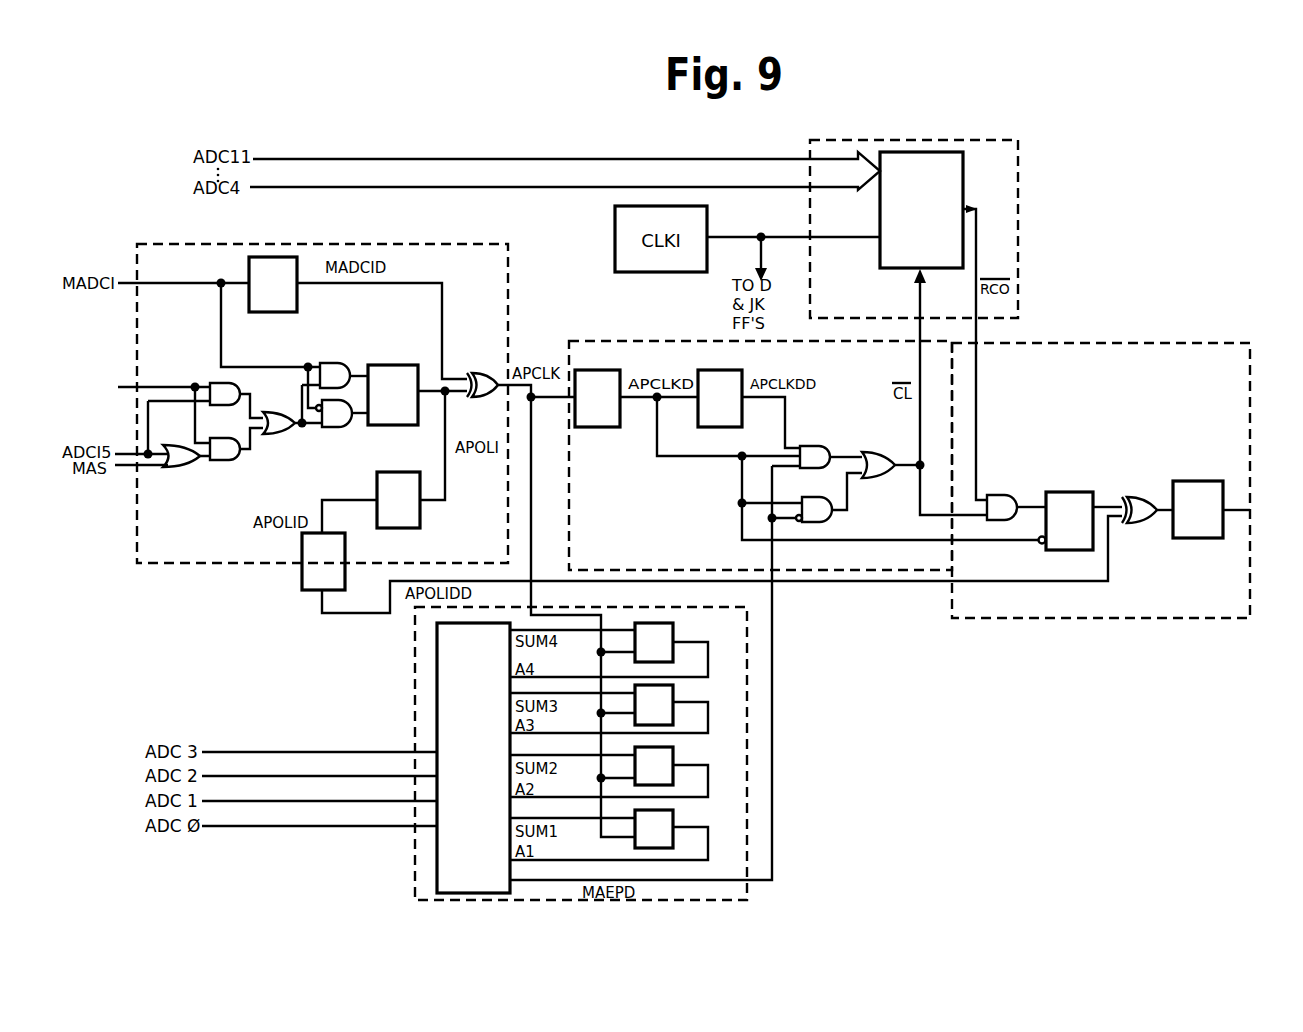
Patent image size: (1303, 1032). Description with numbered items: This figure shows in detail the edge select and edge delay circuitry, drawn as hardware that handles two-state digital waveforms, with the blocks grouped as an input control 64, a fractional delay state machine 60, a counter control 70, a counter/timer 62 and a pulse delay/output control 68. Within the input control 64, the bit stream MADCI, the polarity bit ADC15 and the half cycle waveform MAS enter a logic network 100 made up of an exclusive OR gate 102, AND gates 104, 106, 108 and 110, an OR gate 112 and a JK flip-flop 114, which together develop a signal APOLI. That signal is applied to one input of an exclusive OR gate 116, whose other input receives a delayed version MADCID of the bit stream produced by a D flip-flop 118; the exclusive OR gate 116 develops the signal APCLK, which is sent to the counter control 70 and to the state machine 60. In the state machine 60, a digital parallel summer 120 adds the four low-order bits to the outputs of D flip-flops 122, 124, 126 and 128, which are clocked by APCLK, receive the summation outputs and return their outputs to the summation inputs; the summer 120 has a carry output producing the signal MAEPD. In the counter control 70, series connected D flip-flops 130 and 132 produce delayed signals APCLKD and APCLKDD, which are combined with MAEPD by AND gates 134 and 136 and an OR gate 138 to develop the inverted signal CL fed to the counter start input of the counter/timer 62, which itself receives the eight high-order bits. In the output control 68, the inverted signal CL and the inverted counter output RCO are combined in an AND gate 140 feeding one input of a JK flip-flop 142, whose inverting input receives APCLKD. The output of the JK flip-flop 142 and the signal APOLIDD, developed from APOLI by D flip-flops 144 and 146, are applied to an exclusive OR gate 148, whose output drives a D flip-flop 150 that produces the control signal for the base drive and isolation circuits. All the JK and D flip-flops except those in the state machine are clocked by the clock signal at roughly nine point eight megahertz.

The fractional delay state machine 60 is at (413, 712).
The counter/timer 62 is at (1003, 197).
The input control 64 is at (183, 553).
The pulse delay/output control 68 is at (1050, 612).
The counter control 70 is at (672, 341).
The logic network 100 is at (270, 476).
The exclusive OR gate 102 is at (188, 468).
The AND gate 104 is at (218, 383).
The AND gate 106 is at (224, 461).
The AND gate 108 is at (338, 363).
The AND gate 110 is at (333, 427).
The OR gate 112 is at (278, 434).
The JK flip-flop 114 is at (400, 365).
The exclusive OR gate 116 is at (486, 373).
The D flip-flop 118 is at (284, 312).
The digital parallel summer 120 is at (448, 652).
The D flip-flop 122 is at (675, 818).
The D flip-flop 124 is at (675, 756).
The D flip-flop 126 is at (675, 694).
The D flip-flop 128 is at (675, 632).
The D flip-flop 130 is at (596, 427).
The D flip-flop 132 is at (731, 372).
The AND gate 134 is at (818, 446).
The AND gate 136 is at (832, 521).
The OR gate 138 is at (882, 452).
The AND gate 140 is at (1003, 495).
The JK flip-flop 142 is at (1070, 492).
The D flip-flop 144 is at (377, 481).
The D flip-flop 146 is at (302, 549).
The exclusive OR gate 148 is at (1141, 498).
The D flip-flop 150 is at (1201, 481).